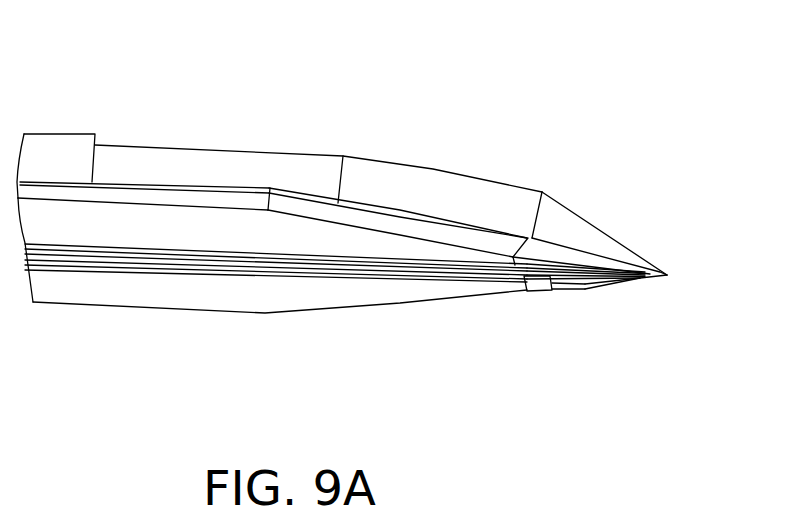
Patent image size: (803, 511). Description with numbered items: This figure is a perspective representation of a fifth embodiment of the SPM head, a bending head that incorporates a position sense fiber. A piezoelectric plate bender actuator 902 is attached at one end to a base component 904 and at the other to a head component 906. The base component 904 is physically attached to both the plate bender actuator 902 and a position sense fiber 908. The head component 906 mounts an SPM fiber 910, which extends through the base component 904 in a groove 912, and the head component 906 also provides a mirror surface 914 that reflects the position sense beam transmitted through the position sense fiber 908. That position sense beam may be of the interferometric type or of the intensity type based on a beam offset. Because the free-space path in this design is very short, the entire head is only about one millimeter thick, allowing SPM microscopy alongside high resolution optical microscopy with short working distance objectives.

The piezoelectric plate bender actuator 902 is at (317, 167).
The base component 904 is at (207, 292).
The head component 906 is at (582, 292).
The position sense fiber 908 is at (530, 288).
The SPM fiber 910 is at (530, 237).
The groove 912 is at (573, 270).
The mirror surface 914 is at (553, 288).